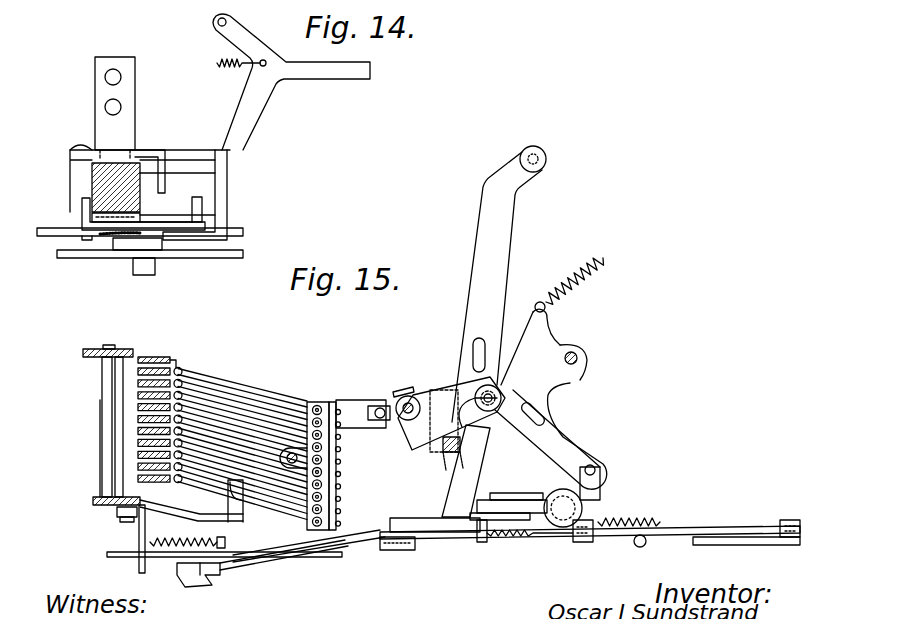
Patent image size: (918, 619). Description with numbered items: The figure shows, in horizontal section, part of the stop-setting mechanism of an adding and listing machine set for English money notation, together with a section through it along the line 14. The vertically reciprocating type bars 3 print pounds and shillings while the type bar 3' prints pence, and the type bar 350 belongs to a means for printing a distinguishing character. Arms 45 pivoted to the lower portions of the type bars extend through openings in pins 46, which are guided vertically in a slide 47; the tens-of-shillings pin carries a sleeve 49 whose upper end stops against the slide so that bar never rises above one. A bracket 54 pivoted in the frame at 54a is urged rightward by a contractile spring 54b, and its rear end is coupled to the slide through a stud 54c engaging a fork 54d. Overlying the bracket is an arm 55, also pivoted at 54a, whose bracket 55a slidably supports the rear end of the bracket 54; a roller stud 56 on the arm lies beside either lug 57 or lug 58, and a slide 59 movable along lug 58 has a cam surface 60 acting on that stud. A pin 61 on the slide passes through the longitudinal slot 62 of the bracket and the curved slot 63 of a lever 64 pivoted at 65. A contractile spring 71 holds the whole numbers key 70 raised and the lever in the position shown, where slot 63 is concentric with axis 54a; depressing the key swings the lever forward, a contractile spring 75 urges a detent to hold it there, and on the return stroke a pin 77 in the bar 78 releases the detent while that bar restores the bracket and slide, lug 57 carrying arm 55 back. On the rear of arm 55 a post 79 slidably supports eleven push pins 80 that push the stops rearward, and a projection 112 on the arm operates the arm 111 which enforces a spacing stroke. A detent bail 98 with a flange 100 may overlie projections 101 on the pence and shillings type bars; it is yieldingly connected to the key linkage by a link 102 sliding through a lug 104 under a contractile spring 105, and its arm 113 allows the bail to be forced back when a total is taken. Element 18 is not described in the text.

In FIG. 14, the projections 101 is at (109, 6).
In FIG. 15, the projections 101 is at (138, 394).
In FIG. 14, the post 79 is at (136, 74).
In FIG. 14, the push pins 80 is at (107, 107).
In FIG. 14, the arm 111 is at (250, 117).
In FIG. 14, the projection 112 is at (158, 150).
In FIG. 14, the arm 55 is at (95, 182).
In FIG. 14, the lug 57 is at (82, 218).
In FIG. 15, the lug 57 is at (403, 390).
In FIG. 14, the slide 59 is at (163, 213).
In FIG. 15, the slide 59 is at (486, 421).
In FIG. 14, the lug 58 is at (202, 205).
In FIG. 15, the lug 58 is at (437, 474).
In FIG. 14, the bracket 55a is at (228, 218).
In FIG. 15, the bracket 55a is at (472, 451).
In FIG. 14, the roller stud 56 is at (108, 238).
In FIG. 15, the roller stud 56 is at (441, 393).
In FIG. 14, the bracket 54 is at (108, 258).
In FIG. 15, the bracket 54 is at (556, 376).
In FIG. 14, the pin 61 is at (156, 268).
In FIG. 15, the pin 61 is at (498, 385).
In FIG. 14, the lever 64 is at (223, 267).
In FIG. 15, the lever 64 is at (497, 253).
In FIG. 15, the flange 100 is at (83, 355).
In FIG. 15, the detent bail 98 is at (102, 491).
In FIG. 15, the type bar 350 is at (150, 357).
In FIG. 15, the type bar 3' is at (178, 350).
In FIG. 15, the type bars 3 is at (186, 444).
In FIG. 15, the arms 45 is at (191, 506).
In FIG. 15, the arm 113 is at (243, 508).
In FIG. 15, the contractile spring 105 is at (218, 538).
In FIG. 15, the lug 104 is at (139, 571).
In FIG. 15, the plate 18 is at (272, 560).
In FIG. 15, the link 102 is at (360, 552).
In FIG. 15, the slide 47 is at (308, 402).
In FIG. 15, the pins 46 is at (322, 482).
In FIG. 15, the sleeve 49 is at (333, 402).
In FIG. 15, the fork 54d is at (350, 400).
In FIG. 15, the stud 54c is at (378, 419).
In FIG. 15, the cam surface 60 is at (402, 437).
In FIG. 15, the section line 14 is at (378, 379).
In FIG. 15, the curved slot 63 is at (472, 352).
In FIG. 15, the pivot 65 is at (547, 160).
In FIG. 15, the pivot 54a is at (576, 354).
In FIG. 15, the contractile spring 54b is at (605, 262).
In FIG. 15, the slot 62 is at (560, 403).
In FIG. 15, the key 70 is at (560, 496).
In FIG. 15, the pin 77 is at (583, 542).
In FIG. 15, the contractile spring 71 is at (497, 542).
In FIG. 15, the contractile spring 75 is at (656, 522).
In FIG. 15, the bar 78 is at (728, 526).